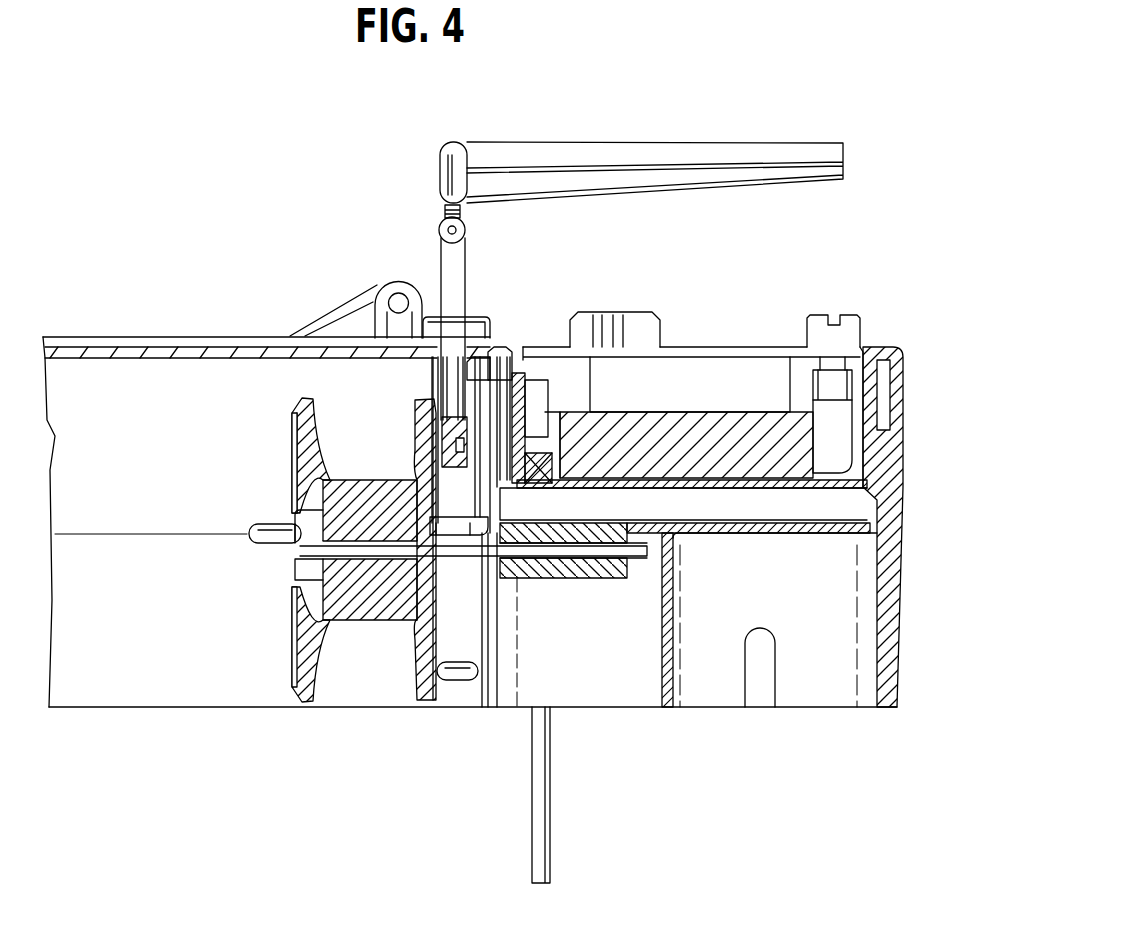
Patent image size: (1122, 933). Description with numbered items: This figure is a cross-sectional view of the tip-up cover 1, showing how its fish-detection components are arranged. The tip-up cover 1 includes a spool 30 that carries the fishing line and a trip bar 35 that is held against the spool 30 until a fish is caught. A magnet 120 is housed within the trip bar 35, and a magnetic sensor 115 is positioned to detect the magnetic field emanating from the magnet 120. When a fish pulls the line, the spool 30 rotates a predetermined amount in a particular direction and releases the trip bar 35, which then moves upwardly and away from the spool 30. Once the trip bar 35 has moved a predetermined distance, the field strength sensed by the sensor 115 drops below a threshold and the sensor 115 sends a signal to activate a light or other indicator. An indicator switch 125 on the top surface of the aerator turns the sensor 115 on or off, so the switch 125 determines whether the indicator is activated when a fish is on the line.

The tip-up cover 1 is at (126, 292).
The spool 30 is at (298, 390).
The trip bar 35 is at (445, 265).
The magnetic sensor 115 is at (537, 455).
The magnet 120 is at (470, 433).
The indicator switch 125 is at (642, 330).